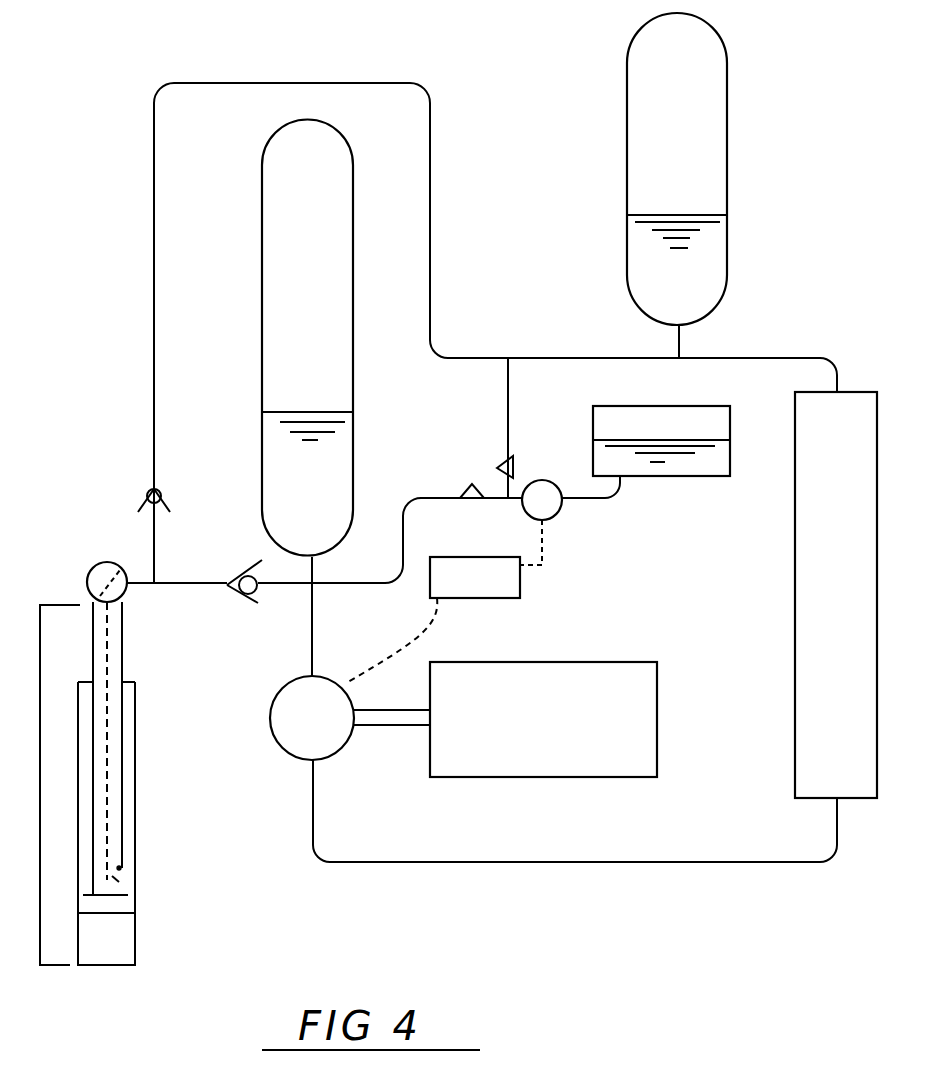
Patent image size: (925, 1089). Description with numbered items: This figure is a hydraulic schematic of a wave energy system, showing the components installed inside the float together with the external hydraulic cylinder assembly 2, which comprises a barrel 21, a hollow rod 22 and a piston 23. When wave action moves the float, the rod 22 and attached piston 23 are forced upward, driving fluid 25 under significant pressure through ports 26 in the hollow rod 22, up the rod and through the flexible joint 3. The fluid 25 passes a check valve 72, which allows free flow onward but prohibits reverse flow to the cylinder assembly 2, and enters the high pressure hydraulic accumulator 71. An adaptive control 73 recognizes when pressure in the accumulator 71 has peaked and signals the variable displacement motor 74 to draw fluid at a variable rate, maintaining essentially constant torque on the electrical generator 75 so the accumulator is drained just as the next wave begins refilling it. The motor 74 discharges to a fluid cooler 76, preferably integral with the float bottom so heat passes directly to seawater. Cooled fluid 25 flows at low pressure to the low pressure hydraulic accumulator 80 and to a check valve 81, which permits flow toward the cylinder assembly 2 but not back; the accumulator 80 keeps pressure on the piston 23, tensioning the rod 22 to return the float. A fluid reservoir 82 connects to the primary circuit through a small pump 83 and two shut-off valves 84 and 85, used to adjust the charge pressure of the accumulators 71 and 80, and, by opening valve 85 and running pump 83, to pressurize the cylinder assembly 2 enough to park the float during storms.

The hydraulic cylinder assembly 2 is at (80, 785).
The flexible joint 3 is at (93, 572).
The barrel 21 is at (135, 858).
The hollow rod 22 is at (123, 656).
The piston 23 is at (117, 905).
The fluid 25 is at (262, 437).
The ports 26 is at (122, 876).
The high pressure hydraulic accumulator 71 is at (258, 322).
The check valve 72 is at (242, 600).
The adaptive control 73 is at (462, 590).
The variable displacement motor 74 is at (330, 758).
The electrical generator 75 is at (540, 778).
The fluid cooler 76 is at (795, 742).
The low pressure hydraulic accumulator 80 is at (728, 152).
The check valve 81 is at (146, 492).
The fluid reservoir 82 is at (670, 467).
The small pump 83 is at (553, 512).
The shut-off valve 84 is at (507, 465).
The shut-off valve 85 is at (468, 487).